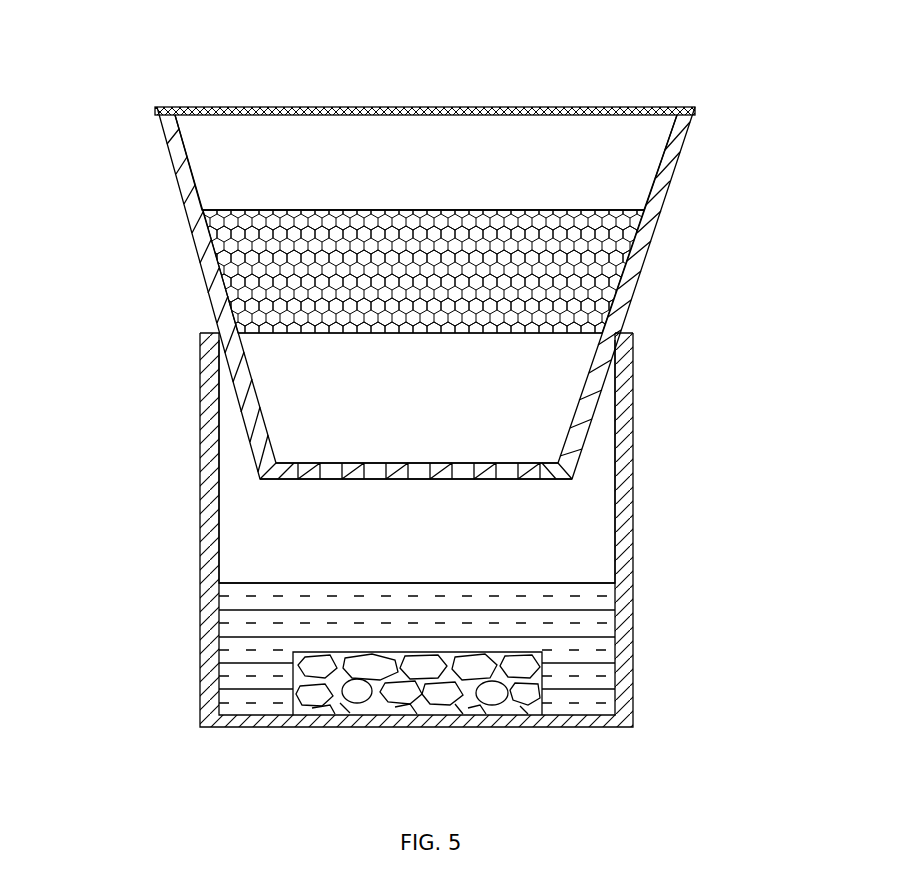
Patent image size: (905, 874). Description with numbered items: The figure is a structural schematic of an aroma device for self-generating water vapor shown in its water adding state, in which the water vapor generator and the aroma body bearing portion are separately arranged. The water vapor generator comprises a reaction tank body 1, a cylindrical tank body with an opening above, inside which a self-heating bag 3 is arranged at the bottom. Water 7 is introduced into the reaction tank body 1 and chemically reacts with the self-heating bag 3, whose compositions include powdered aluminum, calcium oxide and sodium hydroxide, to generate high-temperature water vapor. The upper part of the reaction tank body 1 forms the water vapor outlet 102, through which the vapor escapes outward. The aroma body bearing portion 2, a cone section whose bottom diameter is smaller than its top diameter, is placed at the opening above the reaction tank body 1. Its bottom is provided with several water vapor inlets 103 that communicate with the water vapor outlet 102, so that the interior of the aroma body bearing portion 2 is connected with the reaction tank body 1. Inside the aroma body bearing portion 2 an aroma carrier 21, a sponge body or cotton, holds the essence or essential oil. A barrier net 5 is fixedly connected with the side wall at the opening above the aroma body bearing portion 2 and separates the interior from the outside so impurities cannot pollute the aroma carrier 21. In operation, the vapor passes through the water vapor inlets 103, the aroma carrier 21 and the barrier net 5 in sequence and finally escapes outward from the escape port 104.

The reaction tank body 1 is at (203, 428).
The aroma body bearing portion 2 is at (190, 232).
The self-heating bag 3 is at (293, 670).
The barrier net 5 is at (217, 108).
The water 7 is at (580, 628).
The aroma carrier 21 is at (587, 247).
The water vapor outlet 102 is at (500, 534).
The water vapor inlet 103 is at (535, 472).
The escape port 104 is at (527, 122).